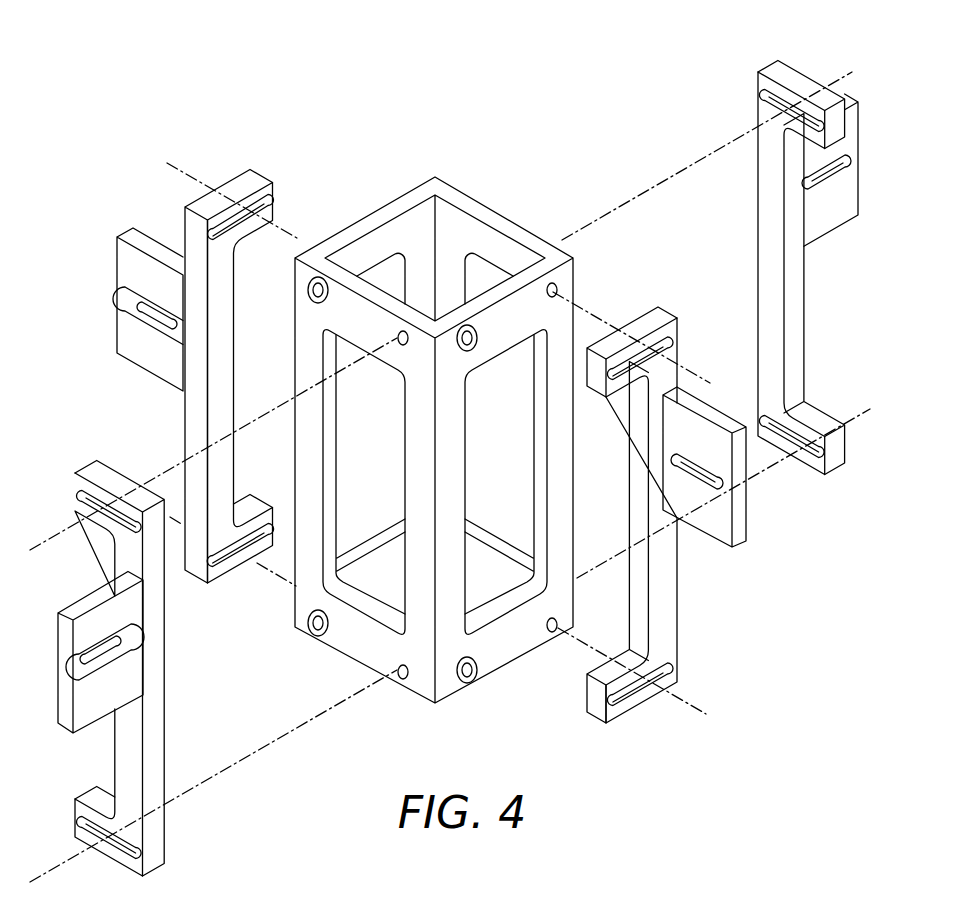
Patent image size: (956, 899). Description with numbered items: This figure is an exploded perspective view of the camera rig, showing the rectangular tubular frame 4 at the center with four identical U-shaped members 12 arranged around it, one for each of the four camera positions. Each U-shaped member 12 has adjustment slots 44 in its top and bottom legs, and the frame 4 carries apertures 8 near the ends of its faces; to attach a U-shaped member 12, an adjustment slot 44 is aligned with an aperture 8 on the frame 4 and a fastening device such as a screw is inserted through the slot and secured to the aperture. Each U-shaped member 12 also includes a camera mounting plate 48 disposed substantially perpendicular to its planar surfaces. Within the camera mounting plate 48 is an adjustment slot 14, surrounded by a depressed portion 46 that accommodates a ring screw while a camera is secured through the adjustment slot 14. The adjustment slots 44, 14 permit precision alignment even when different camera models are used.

The rectangular tubular frame 4 is at (462, 206).
The aperture 8 is at (400, 345).
The U-shaped member 12 is at (248, 185).
The adjustment slot 14 is at (145, 318).
The adjustment slot 44 is at (268, 196).
The depressed portion 46 is at (133, 286).
The camera mounting plate 48 is at (148, 358).